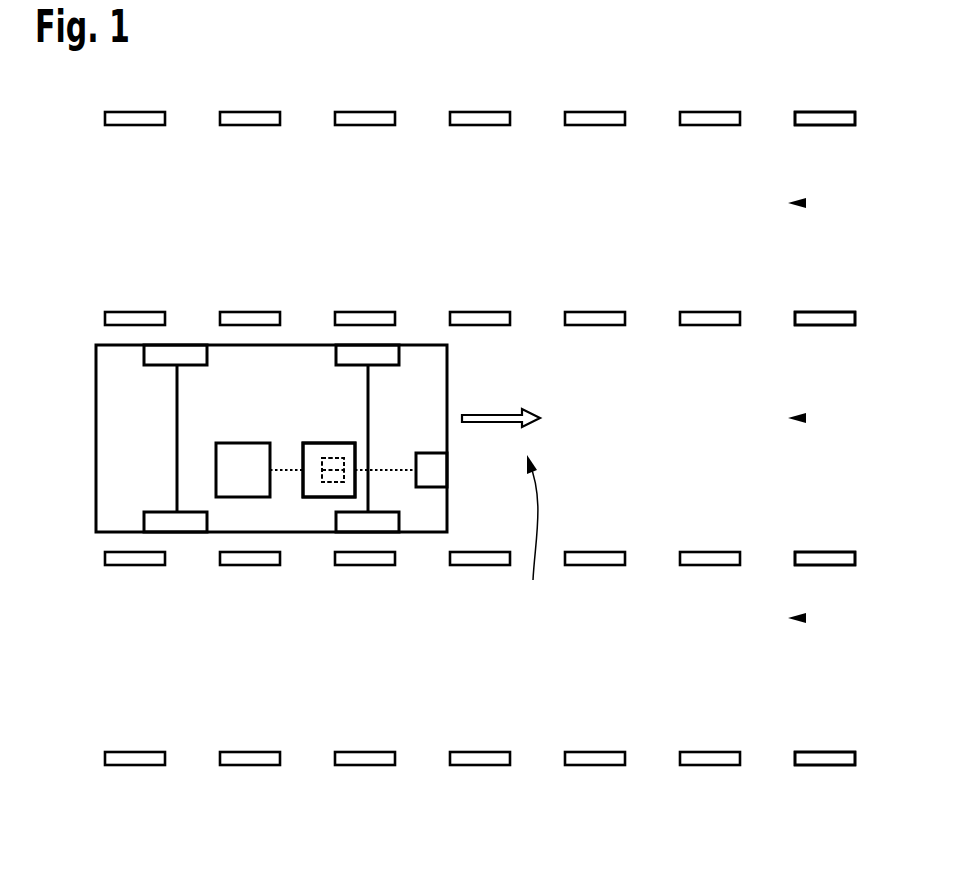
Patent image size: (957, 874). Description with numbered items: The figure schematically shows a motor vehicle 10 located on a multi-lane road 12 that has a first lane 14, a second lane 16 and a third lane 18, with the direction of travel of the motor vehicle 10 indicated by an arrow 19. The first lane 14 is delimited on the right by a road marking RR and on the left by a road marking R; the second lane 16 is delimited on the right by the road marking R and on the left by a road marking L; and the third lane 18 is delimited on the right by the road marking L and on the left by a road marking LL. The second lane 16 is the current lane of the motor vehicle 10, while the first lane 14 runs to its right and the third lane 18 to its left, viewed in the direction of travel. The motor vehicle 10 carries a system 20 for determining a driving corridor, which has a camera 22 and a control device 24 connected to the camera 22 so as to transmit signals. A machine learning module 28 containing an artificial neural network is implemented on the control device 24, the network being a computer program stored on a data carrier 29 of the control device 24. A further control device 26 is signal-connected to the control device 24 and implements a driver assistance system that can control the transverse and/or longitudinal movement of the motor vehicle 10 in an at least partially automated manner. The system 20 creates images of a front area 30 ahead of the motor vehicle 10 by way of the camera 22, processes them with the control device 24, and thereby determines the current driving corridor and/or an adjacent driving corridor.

The motor vehicle 10 is at (422, 345).
The multi-lane road 12 is at (421, 108).
The first lane 14 is at (806, 618).
The second lane 16 is at (806, 418).
The third lane 18 is at (806, 203).
The arrow 19 is at (500, 410).
The system 20 is at (319, 412).
The camera 22 is at (433, 465).
The control device 24 is at (314, 497).
The further control device 26 is at (231, 497).
The machine learning module 28 is at (330, 482).
The data carrier 29 is at (337, 458).
The front area 30 is at (535, 536).
The road marking LL is at (820, 108).
The road marking L is at (820, 312).
The road marking R is at (820, 552).
The road marking RR is at (820, 752).